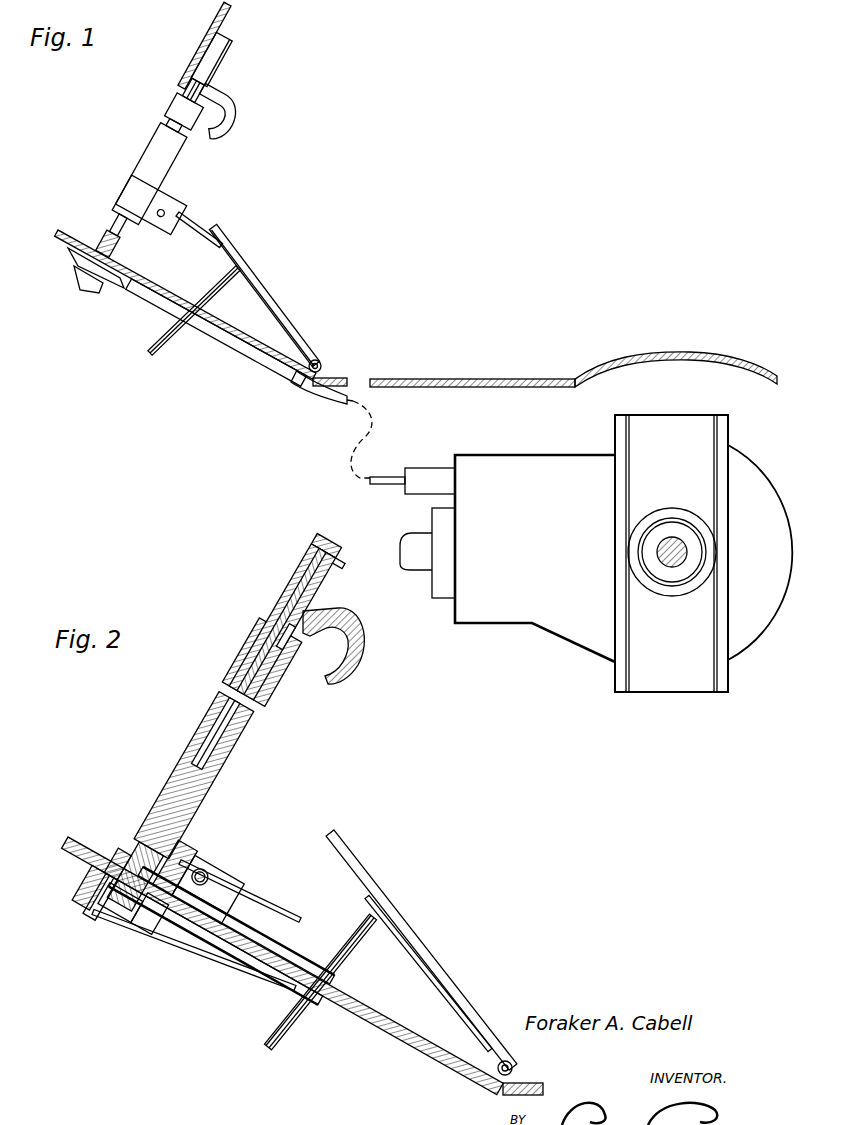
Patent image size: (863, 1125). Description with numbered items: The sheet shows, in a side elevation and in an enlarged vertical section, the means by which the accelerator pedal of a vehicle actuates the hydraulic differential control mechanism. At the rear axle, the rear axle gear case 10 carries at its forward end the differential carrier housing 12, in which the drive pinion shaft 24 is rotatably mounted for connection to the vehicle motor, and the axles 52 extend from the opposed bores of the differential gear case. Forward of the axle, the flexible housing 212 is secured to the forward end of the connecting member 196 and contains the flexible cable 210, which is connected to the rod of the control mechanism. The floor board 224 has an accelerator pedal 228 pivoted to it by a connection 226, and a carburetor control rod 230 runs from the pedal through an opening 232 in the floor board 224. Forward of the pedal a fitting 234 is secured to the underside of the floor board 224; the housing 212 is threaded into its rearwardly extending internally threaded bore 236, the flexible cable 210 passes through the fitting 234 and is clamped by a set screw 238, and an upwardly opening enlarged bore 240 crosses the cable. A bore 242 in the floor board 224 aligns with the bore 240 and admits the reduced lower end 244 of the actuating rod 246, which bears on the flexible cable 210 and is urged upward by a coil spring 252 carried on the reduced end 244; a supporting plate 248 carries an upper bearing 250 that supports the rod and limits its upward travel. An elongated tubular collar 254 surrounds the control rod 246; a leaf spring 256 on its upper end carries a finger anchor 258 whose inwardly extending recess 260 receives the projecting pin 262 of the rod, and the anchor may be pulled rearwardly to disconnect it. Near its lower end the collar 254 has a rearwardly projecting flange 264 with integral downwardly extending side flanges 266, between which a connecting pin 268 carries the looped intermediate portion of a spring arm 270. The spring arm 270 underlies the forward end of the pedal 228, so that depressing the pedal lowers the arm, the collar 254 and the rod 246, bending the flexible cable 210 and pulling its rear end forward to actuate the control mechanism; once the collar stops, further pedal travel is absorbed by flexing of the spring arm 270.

In FIG. 1, the rear axle gear case 10 is at (753, 450).
In FIG. 1, the differential carrier housing 12 is at (548, 451).
In FIG. 1, the drive pinion shaft 24 is at (412, 568).
In FIG. 1, the axles 52 is at (668, 568).
In FIG. 1, the connecting member 196 is at (422, 470).
In FIG. 1, the flexible cable 210 is at (378, 433).
In FIG. 2, the flexible cable 210 is at (115, 918).
In FIG. 1, the flexible housing 212 is at (157, 306).
In FIG. 2, the flexible housing 212 is at (170, 925).
In FIG. 1, the floor board 224 is at (410, 379).
In FIG. 2, the floor board 224 is at (86, 838).
In FIG. 1, the connection 226 is at (322, 362).
In FIG. 2, the connection 226 is at (515, 1070).
In FIG. 1, the accelerator pedal 228 is at (236, 249).
In FIG. 2, the accelerator pedal 228 is at (417, 938).
In FIG. 1, the carburetor control rod 230 is at (212, 300).
In FIG. 2, the carburetor control rod 230 is at (295, 1020).
In FIG. 1, the opening 232 is at (184, 312).
In FIG. 2, the opening 232 is at (333, 984).
In FIG. 1, the fitting 234 is at (98, 290).
In FIG. 2, the fitting 234 is at (93, 915).
In FIG. 2, the internally threaded bore 236 is at (163, 920).
In FIG. 1, the set screw 238 is at (67, 268).
In FIG. 2, the set screw 238 is at (78, 898).
In FIG. 2, the enlarged bore 240 is at (128, 918).
In FIG. 2, the bore 242 is at (128, 860).
In FIG. 2, the reduced lower end 244 is at (147, 851).
In FIG. 1, the actuating rod 246 is at (189, 90).
In FIG. 2, the actuating rod 246 is at (226, 717).
In FIG. 1, the supporting plate 248 is at (219, 23).
In FIG. 1, the upper bearing 250 is at (233, 42).
In FIG. 1, the coil spring 252 is at (100, 234).
In FIG. 2, the coil spring 252 is at (197, 852).
In FIG. 1, the elongated tubular collar 254 is at (148, 153).
In FIG. 2, the elongated tubular collar 254 is at (222, 780).
In FIG. 2, the leaf spring 256 is at (293, 656).
In FIG. 1, the finger anchor 258 is at (237, 108).
In FIG. 2, the finger anchor 258 is at (362, 650).
In FIG. 2, the recess 260 is at (306, 620).
In FIG. 1, the pin 262 is at (204, 100).
In FIG. 2, the pin 262 is at (346, 559).
In FIG. 2, the rearwardly projecting flange 264 is at (212, 862).
In FIG. 1, the side flanges 266 is at (175, 216).
In FIG. 2, the side flanges 266 is at (218, 892).
In FIG. 1, the connecting pin 268 is at (156, 220).
In FIG. 2, the connecting pin 268 is at (210, 876).
In FIG. 1, the spring arm 270 is at (197, 247).
In FIG. 2, the spring arm 270 is at (285, 908).